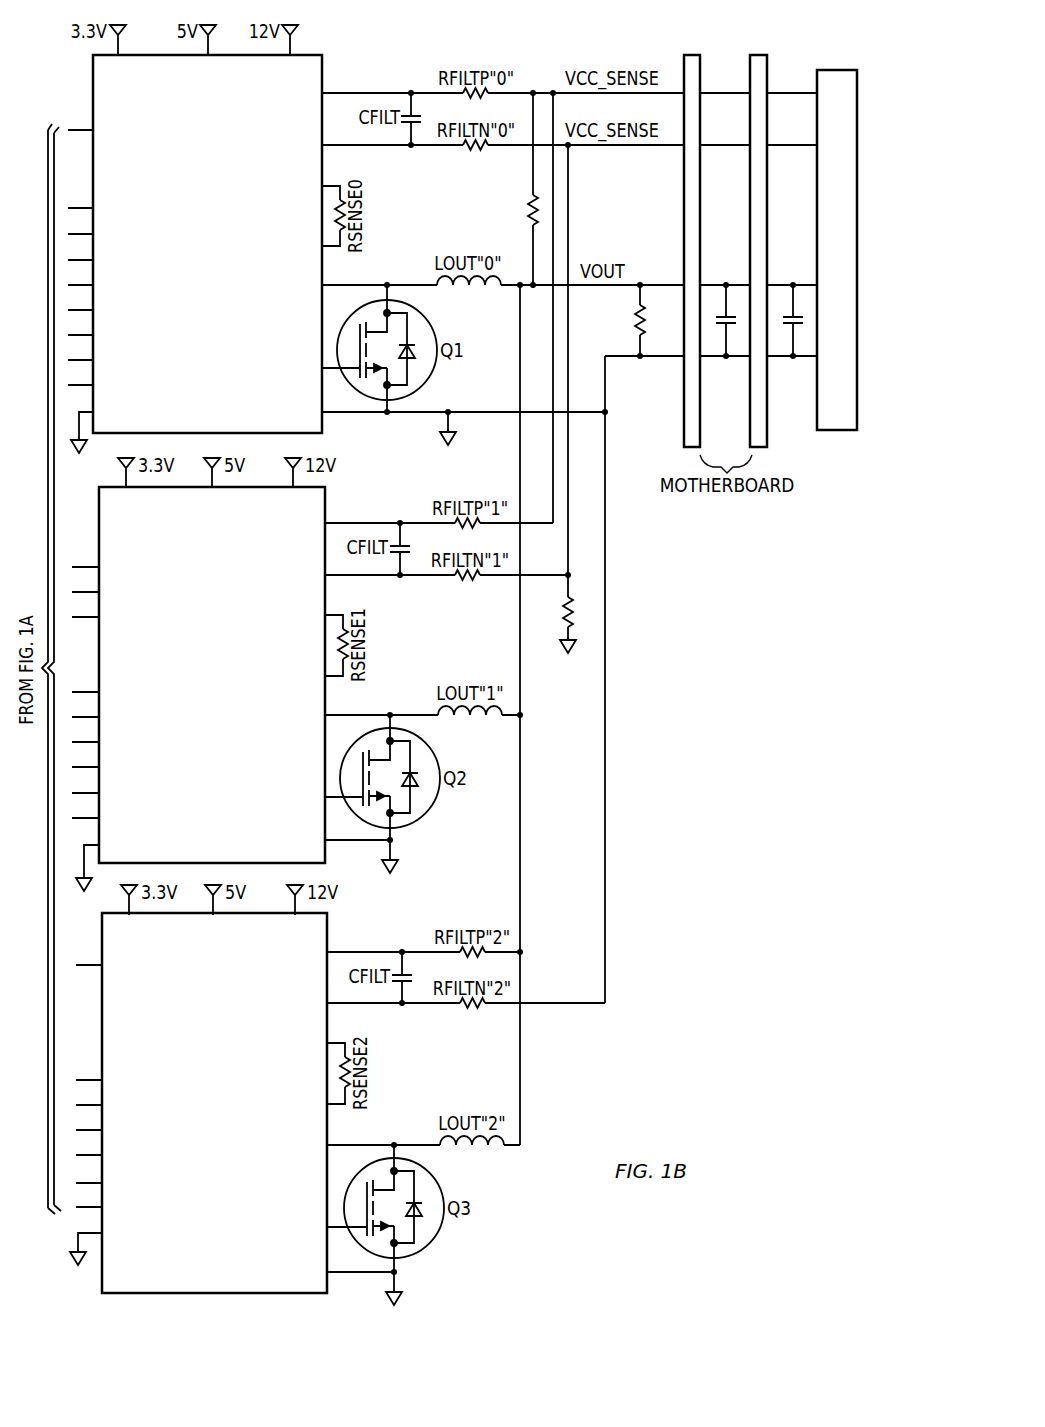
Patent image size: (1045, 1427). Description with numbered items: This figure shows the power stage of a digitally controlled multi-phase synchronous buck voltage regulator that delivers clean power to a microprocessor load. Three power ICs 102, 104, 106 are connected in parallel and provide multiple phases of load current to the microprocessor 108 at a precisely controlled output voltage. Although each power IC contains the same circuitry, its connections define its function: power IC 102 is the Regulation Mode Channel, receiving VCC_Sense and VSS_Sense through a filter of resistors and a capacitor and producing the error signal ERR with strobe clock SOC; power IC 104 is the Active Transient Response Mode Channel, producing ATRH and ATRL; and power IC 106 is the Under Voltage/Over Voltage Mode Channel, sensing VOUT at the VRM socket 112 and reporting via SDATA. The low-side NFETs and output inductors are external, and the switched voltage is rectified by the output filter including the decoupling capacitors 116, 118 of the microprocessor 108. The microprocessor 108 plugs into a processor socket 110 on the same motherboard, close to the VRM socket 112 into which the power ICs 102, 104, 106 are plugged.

The power IC 102 is at (190, 338).
The power IC 104 is at (192, 773).
The power IC 106 is at (195, 1200).
The microprocessor 108 is at (835, 70).
The processor socket 110 is at (764, 55).
The VRM socket 112 is at (691, 55).
The decoupling capacitor 116 is at (802, 325).
The decoupling capacitor 118 is at (735, 325).